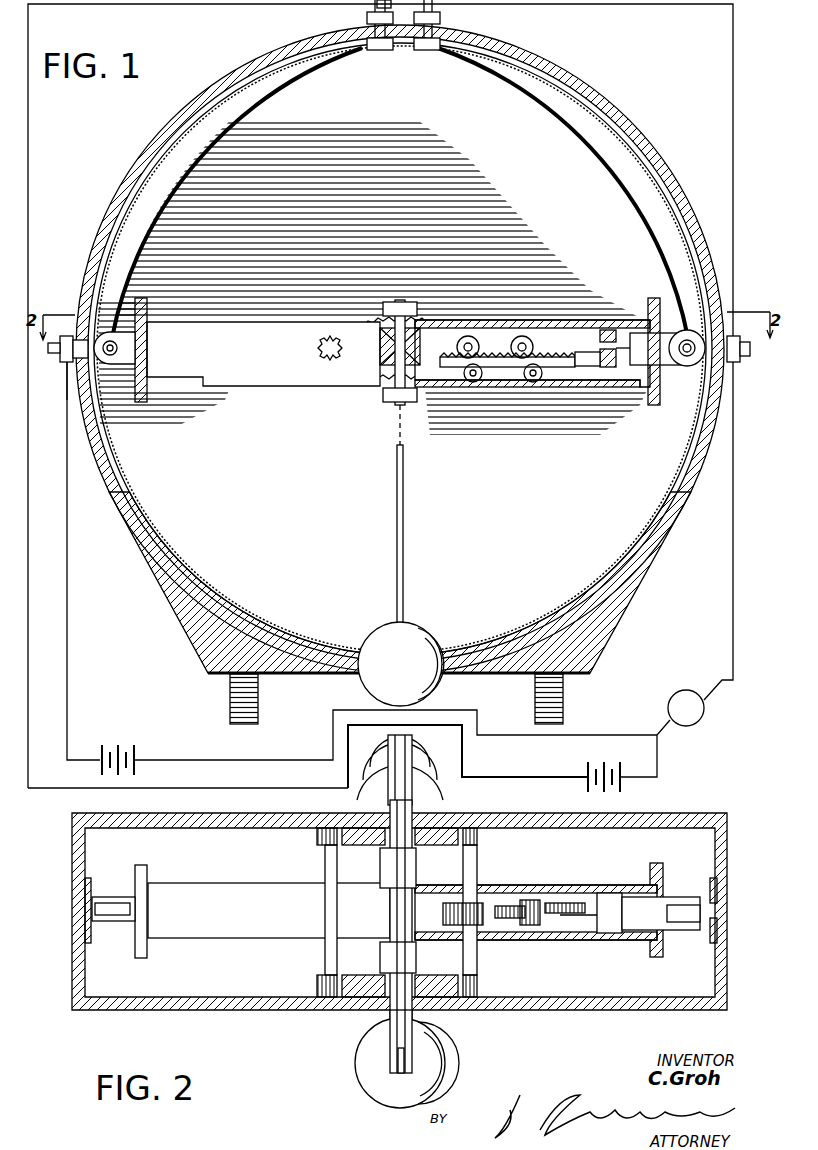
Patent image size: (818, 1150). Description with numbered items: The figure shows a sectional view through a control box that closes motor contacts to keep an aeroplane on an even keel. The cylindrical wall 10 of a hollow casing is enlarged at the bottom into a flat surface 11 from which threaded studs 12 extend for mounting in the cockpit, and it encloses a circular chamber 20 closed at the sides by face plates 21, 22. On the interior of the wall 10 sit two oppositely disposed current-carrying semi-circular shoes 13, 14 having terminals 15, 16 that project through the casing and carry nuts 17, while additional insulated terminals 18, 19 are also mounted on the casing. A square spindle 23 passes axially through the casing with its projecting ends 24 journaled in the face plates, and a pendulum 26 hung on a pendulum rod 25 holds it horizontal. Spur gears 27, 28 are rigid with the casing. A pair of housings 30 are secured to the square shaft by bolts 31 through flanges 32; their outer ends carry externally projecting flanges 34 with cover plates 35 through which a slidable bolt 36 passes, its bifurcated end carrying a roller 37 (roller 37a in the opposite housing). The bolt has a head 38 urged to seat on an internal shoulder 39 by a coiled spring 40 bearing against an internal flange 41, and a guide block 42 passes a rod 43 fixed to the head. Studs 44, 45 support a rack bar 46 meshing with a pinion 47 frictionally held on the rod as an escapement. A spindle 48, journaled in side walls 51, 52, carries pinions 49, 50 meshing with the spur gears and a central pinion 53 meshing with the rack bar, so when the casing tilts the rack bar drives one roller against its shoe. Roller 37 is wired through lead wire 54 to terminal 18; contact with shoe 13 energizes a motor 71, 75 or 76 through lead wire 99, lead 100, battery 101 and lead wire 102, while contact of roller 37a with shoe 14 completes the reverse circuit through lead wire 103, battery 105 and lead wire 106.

In FIG. 1, the cylindrical wall 10 is at (650, 142).
In FIG. 2, the cylindrical wall 10 is at (727, 855).
In FIG. 1, the flat surface 11 is at (215, 676).
In FIG. 1, the threaded studs 12 is at (260, 700).
In FIG. 1, the semi-circular shoe 13 is at (600, 102).
In FIG. 2, the semi-circular shoe 13 is at (727, 965).
In FIG. 1, the semi-circular shoe 14 is at (240, 70).
In FIG. 2, the semi-circular shoe 14 is at (72, 880).
In FIG. 1, the terminal 15 is at (750, 355).
In FIG. 1, the terminal 16 is at (56, 354).
In FIG. 1, the nuts 17 is at (740, 335).
In FIG. 1, the terminal 18 is at (440, 14).
In FIG. 1, the terminal 19 is at (375, 8).
In FIG. 1, the circular chamber 20 is at (620, 190).
In FIG. 2, the circular chamber 20 is at (722, 840).
In FIG. 2, the face plate 21 is at (700, 813).
In FIG. 2, the face plate 22 is at (705, 1010).
In FIG. 1, the square spindle 23 is at (383, 365).
In FIG. 2, the square spindle 23 is at (415, 936).
In FIG. 1, the projecting ends 24 is at (420, 790).
In FIG. 2, the projecting ends 24 is at (415, 1030).
In FIG. 2, the pendulum rod 25 is at (410, 1058).
In FIG. 1, the pendulum 26 is at (440, 680).
In FIG. 2, the pendulum 26 is at (370, 1060).
In FIG. 2, the spur gear 27 is at (360, 845).
In FIG. 2, the spur gear 28 is at (440, 1000).
In FIG. 1, the housing 30 is at (272, 395).
In FIG. 2, the housing 30 is at (270, 940).
In FIG. 1, the bolts 31 is at (400, 300).
In FIG. 1, the flanges 32 is at (395, 395).
In FIG. 1, the externally projecting flange 34 is at (655, 380).
In FIG. 2, the externally projecting flange 34 is at (645, 957).
In FIG. 1, the cover plate 35 is at (660, 405).
In FIG. 2, the cover plate 35 is at (140, 958).
In FIG. 1, the slidable bolt 36 is at (112, 330).
In FIG. 1, the roller 37 is at (690, 366).
In FIG. 2, the roller 37 is at (700, 925).
In FIG. 1, the roller 37a is at (115, 362).
In FIG. 2, the roller 37a is at (75, 960).
In FIG. 1, the head 38 is at (600, 395).
In FIG. 1, the internal shoulder 39 is at (606, 330).
In FIG. 1, the coiled spring 40 is at (625, 335).
In FIG. 2, the coiled spring 40 is at (663, 870).
In FIG. 1, the internal flange 41 is at (663, 313).
In FIG. 1, the guide block 42 is at (560, 395).
In FIG. 1, the rod 43 is at (550, 360).
In FIG. 2, the rod 43 is at (600, 932).
In FIG. 1, the stud 44 is at (473, 385).
In FIG. 1, the stud 45 is at (533, 385).
In FIG. 1, the rack bar 46 is at (470, 335).
In FIG. 1, the pinion 47 is at (480, 345).
In FIG. 2, the pinion 47 is at (520, 930).
In FIG. 2, the spindle 48 is at (477, 870).
In FIG. 1, the pinion 49 is at (330, 360).
In FIG. 2, the pinion 49 is at (478, 838).
In FIG. 2, the pinion 50 is at (478, 985).
In FIG. 1, the side wall 51 is at (160, 213).
In FIG. 2, the side wall 51 is at (545, 890).
In FIG. 2, the side wall 52 is at (565, 940).
In FIG. 2, the pinion 53 is at (553, 888).
In FIG. 1, the insulated lead wire 54 is at (590, 150).
In FIG. 1, the motor 71 is at (686, 690).
In FIG. 1, the motor 75 is at (700, 714).
In FIG. 1, the electrical motor 76 is at (688, 722).
In FIG. 1, the lead wire 99 is at (733, 548).
In FIG. 1, the lead 100 is at (657, 760).
In FIG. 1, the battery 101 is at (603, 775).
In FIG. 1, the lead wire 102 is at (500, 735).
In FIG. 1, the lead wire 103 is at (733, 92).
In FIG. 1, the battery 105 is at (118, 748).
In FIG. 1, the lead wire 106 is at (67, 640).